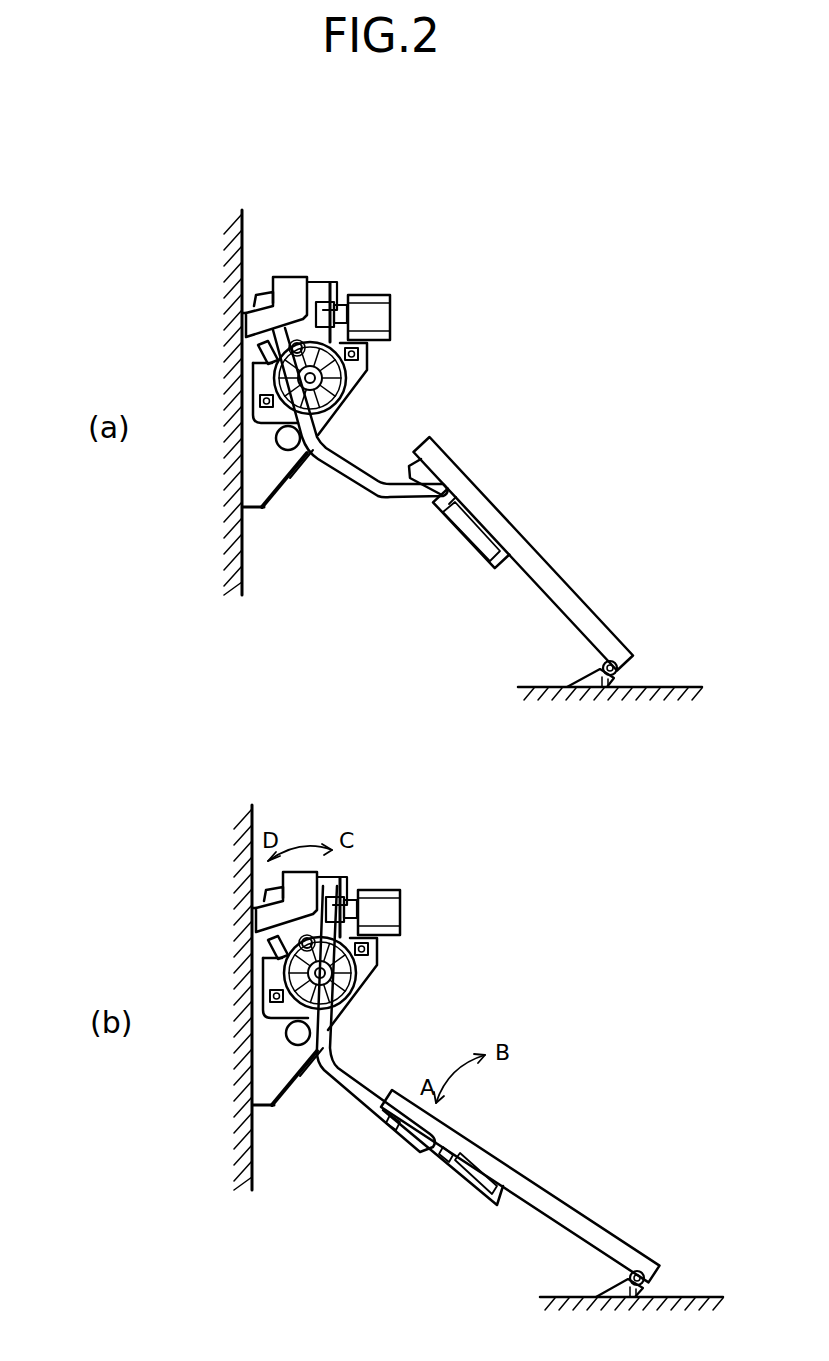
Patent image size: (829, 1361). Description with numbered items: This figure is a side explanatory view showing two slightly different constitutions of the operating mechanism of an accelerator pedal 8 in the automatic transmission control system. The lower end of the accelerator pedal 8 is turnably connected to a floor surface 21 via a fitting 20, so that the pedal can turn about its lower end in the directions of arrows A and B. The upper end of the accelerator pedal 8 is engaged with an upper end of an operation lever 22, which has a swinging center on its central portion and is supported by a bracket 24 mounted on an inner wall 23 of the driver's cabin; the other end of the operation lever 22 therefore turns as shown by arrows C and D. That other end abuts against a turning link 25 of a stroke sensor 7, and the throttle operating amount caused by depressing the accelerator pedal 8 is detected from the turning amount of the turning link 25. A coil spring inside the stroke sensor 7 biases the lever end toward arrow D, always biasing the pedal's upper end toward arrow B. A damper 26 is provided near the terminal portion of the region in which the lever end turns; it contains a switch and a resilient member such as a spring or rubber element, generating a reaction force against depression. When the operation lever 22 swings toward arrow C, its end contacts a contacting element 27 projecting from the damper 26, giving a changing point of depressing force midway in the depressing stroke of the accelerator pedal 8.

The stroke sensor 7 is at (347, 403).
The accelerator pedal 8 is at (560, 577).
The fitting 20 is at (590, 668).
The floor surface 21 is at (680, 687).
The operation lever 22 is at (343, 478).
The inner wall 23 is at (238, 333).
The bracket 24 is at (262, 508).
The turning link 25 is at (367, 374).
The damper 26 is at (372, 293).
The contacting element 27 is at (313, 282).